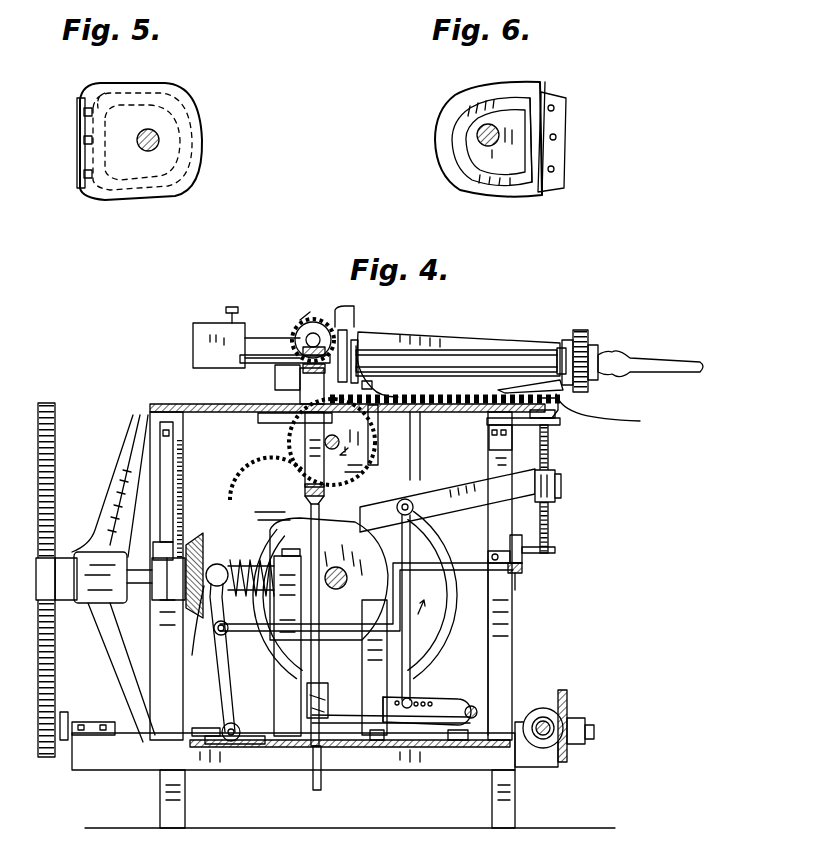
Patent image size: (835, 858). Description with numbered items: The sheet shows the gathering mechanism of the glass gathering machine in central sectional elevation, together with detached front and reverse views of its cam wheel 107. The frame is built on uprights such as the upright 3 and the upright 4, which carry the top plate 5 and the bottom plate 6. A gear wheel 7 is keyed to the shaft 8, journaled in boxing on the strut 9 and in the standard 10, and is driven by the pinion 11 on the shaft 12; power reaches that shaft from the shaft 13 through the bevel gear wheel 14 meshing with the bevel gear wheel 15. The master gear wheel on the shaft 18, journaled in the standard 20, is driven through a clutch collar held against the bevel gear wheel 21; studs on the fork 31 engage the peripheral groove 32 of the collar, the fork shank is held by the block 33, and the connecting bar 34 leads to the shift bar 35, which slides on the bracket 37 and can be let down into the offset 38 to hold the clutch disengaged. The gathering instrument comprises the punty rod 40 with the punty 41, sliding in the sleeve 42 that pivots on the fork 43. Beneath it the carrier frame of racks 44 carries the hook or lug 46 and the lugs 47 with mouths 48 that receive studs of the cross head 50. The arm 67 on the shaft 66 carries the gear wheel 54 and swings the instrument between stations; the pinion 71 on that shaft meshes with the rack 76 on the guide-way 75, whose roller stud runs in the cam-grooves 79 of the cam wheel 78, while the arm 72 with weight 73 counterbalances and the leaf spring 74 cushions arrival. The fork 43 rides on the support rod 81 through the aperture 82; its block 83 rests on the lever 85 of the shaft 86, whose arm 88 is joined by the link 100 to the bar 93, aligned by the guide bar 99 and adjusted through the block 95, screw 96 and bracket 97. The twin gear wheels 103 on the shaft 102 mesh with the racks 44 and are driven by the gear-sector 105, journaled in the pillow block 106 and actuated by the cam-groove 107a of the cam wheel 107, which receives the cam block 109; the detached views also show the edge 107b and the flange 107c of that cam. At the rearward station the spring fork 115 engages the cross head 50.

In FIG. 4, the upright 3 is at (160, 650).
In FIG. 4, the upright 4 is at (513, 664).
In FIG. 4, the top plate 5 is at (205, 413).
In FIG. 4, the bottom plate 6 is at (272, 752).
In FIG. 4, the gear wheel 7 is at (40, 452).
In FIG. 4, the shaft 8 is at (106, 589).
In FIG. 4, the strut 9 is at (110, 520).
In FIG. 4, the standard 10 is at (287, 642).
In FIG. 4, the pinion 11 is at (64, 718).
In FIG. 4, the shaft 12 is at (594, 730).
In FIG. 4, the shaft 13 is at (541, 738).
In FIG. 4, the bevel gear wheel 14 is at (540, 708).
In FIG. 4, the bevel gear wheel 15 is at (568, 698).
In FIG. 5, the shaft 18 is at (140, 146).
In FIG. 6, the shaft 18 is at (495, 129).
In FIG. 4, the shaft 18 is at (338, 590).
In FIG. 4, the standard 20 is at (330, 625).
In FIG. 4, the bevel gear wheel 21 is at (193, 631).
In FIG. 4, the fork 31 is at (216, 617).
In FIG. 4, the peripheral groove 32 is at (215, 540).
In FIG. 4, the block 33 is at (224, 724).
In FIG. 4, the connecting bar 34 is at (476, 575).
In FIG. 4, the shift bar 35 is at (520, 536).
In FIG. 4, the bracket 37 is at (524, 570).
In FIG. 4, the offset 38 is at (548, 546).
In FIG. 4, the punty rod 40 is at (265, 363).
In FIG. 4, the punty 41 is at (680, 364).
In FIG. 4, the sleeve 42 is at (508, 356).
In FIG. 4, the fork 43 is at (308, 430).
In FIG. 4, the racks 44 is at (562, 410).
In FIG. 4, the hook or lug 46 is at (609, 412).
In FIG. 4, the lugs 47 is at (299, 384).
In FIG. 4, the mouth 48 is at (290, 368).
In FIG. 4, the cross head 50 is at (356, 343).
In FIG. 4, the gear wheel 54 is at (588, 330).
In FIG. 4, the shaft 66 is at (318, 318).
In FIG. 4, the arm 67 is at (462, 338).
In FIG. 4, the pinion 71 is at (302, 326).
In FIG. 4, the arm 72 is at (265, 340).
In FIG. 4, the weight 73 is at (194, 352).
In FIG. 4, the leaf spring 74 is at (500, 386).
In FIG. 4, the guide-way 75 is at (378, 462).
In FIG. 4, the rack 76 is at (345, 310).
In FIG. 4, the cam wheel 78 is at (440, 634).
In FIG. 4, the cam-grooves 79 is at (420, 650).
In FIG. 4, the support rod 81 is at (320, 550).
In FIG. 4, the aperture 82 is at (312, 748).
In FIG. 4, the block 83 is at (320, 702).
In FIG. 4, the lever 85 is at (412, 728).
In FIG. 4, the shaft 86 is at (480, 712).
In FIG. 4, the arm 88 is at (452, 700).
In FIG. 4, the bar 93 is at (505, 484).
In FIG. 4, the block 95 is at (562, 492).
In FIG. 4, the screw 96 is at (550, 460).
In FIG. 4, the bracket 97 is at (553, 426).
In FIG. 4, the guide bar 99 is at (166, 470).
In FIG. 4, the link 100 is at (410, 585).
In FIG. 4, the shaft 102 is at (340, 446).
In FIG. 4, the twin gear wheels 103 is at (412, 437).
In FIG. 4, the gear-sector 105 is at (264, 494).
In FIG. 4, the pillow block 106 is at (378, 742).
In FIG. 5, the cam wheel 107 is at (188, 112).
In FIG. 6, the cam wheel 107 is at (452, 106).
In FIG. 4, the cam wheel 107 is at (356, 542).
In FIG. 5, the cam-groove 107a is at (176, 182).
In FIG. 6, the cam-groove 107a is at (470, 172).
In FIG. 5, the gasket edge 107b is at (107, 190).
In FIG. 6, the gasket edge 107b is at (533, 182).
In FIG. 5, the gasket flange 107c is at (116, 98).
In FIG. 6, the gasket flange 107c is at (535, 96).
In FIG. 5, the cam block 109 is at (78, 136).
In FIG. 6, the cam block 109 is at (568, 138).
In FIG. 4, the cam block 109 is at (251, 587).
In FIG. 4, the spring fork 115 is at (395, 396).